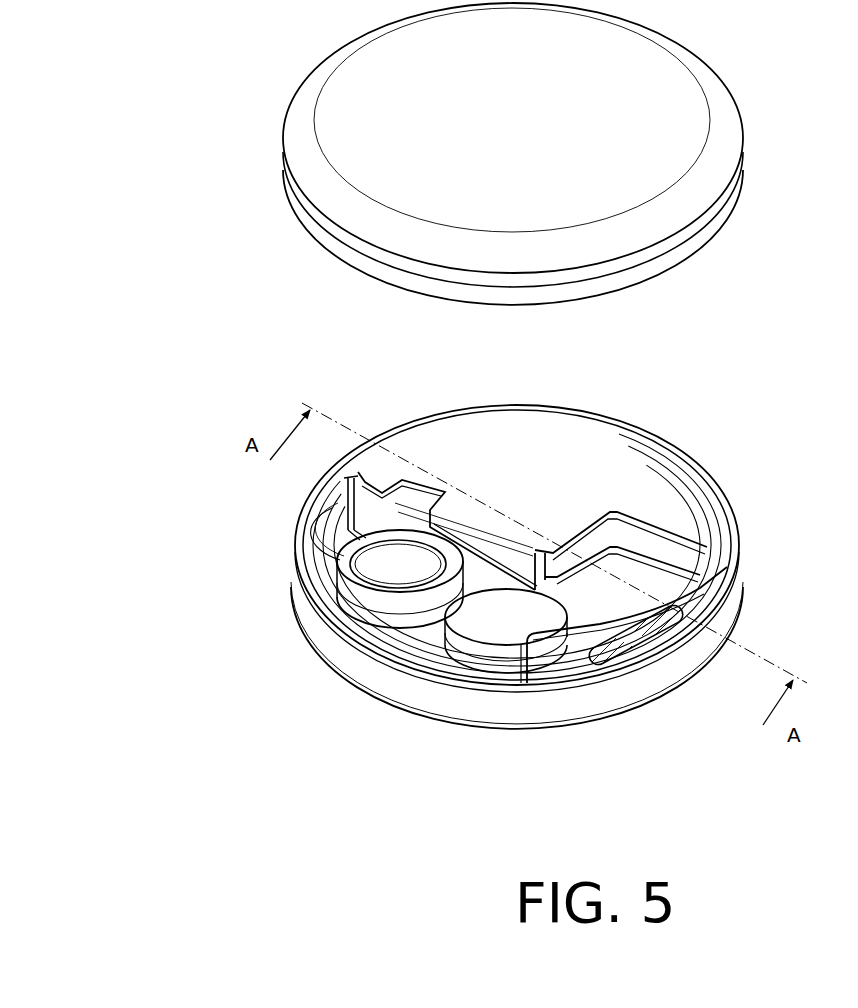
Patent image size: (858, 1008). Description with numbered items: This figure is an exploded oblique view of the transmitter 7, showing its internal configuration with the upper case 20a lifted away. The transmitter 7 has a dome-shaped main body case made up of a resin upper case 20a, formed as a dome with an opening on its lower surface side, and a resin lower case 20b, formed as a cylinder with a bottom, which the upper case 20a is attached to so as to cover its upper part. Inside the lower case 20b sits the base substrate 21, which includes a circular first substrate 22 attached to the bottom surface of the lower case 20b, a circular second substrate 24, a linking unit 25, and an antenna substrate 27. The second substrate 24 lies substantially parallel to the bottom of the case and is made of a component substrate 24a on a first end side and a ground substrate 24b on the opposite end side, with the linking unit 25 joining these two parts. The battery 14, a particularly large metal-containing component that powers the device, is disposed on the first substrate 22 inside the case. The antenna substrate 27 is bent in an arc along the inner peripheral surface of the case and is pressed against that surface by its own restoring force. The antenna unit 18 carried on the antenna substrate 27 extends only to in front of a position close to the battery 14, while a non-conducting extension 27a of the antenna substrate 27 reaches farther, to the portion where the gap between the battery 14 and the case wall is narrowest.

The transmitter 7 is at (205, 172).
The upper case 20a is at (365, 117).
The lower case 20b is at (383, 672).
The base substrate 21 is at (390, 432).
The second substrate 24 is at (497, 463).
The component substrate 24a is at (665, 508).
The ground substrate 24b is at (675, 567).
The linking unit 25 is at (457, 532).
The battery 14 is at (343, 580).
The first substrate 22 is at (661, 665).
The antenna substrate 27 is at (580, 652).
The extension 27a is at (550, 668).
The antenna unit 18 is at (625, 598).